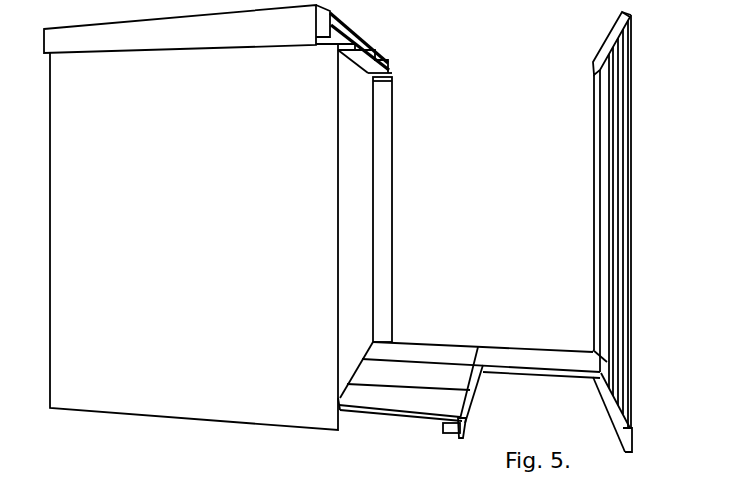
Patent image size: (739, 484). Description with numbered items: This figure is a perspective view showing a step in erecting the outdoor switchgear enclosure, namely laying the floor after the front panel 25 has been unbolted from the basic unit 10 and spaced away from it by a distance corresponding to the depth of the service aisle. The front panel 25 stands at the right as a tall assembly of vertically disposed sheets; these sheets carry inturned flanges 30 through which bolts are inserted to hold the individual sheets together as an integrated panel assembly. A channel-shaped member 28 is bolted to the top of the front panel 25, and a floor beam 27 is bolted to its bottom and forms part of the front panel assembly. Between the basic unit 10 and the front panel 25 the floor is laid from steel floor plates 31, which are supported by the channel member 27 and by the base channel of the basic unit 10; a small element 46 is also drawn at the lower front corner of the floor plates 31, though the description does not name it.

The basic unit 10 is at (192, 194).
The front panel 25 is at (631, 203).
The floor beam 27 is at (628, 440).
The channel-shaped member 28 is at (628, 14).
The inturned flanges 30 is at (610, 185).
The floor plates 31 is at (440, 345).
The foot bracket 46 is at (462, 440).